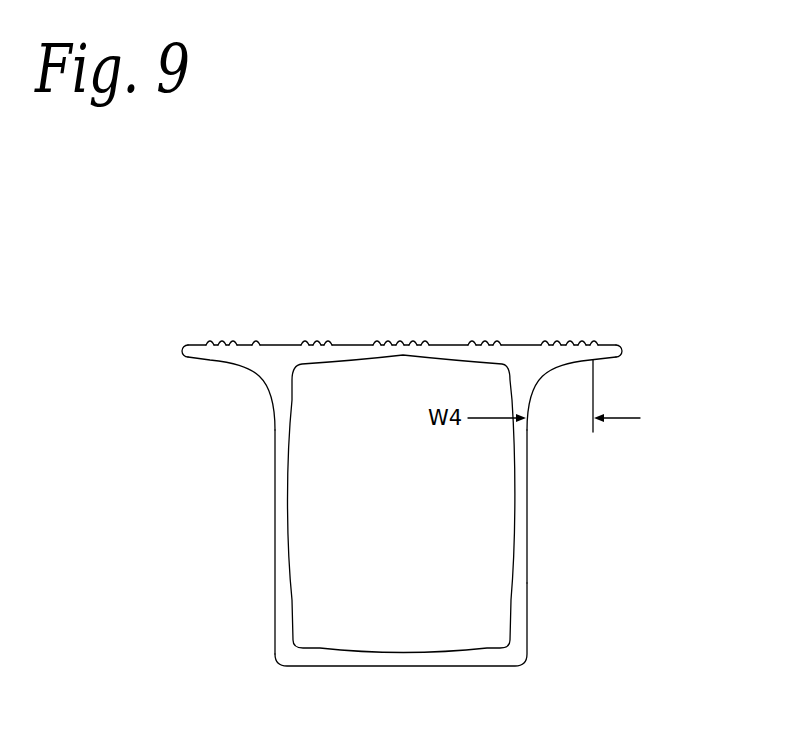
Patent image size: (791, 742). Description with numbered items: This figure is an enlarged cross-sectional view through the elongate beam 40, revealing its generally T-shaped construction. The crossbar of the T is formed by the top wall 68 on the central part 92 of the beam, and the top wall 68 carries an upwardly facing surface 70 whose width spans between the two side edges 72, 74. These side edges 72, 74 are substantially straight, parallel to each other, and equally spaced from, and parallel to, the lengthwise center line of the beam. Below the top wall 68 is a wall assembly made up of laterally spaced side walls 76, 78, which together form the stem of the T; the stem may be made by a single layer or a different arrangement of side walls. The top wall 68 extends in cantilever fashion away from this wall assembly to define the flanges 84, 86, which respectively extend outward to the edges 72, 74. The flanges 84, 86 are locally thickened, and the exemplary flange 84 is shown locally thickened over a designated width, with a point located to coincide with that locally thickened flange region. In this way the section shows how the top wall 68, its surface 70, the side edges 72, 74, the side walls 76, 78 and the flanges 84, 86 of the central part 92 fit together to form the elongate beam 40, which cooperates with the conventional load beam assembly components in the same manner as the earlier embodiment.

The elongate beam 40 is at (252, 513).
The top wall 68 is at (515, 345).
The upwardly facing surface 70 is at (373, 345).
The side edge 72 is at (622, 350).
The side edge 74 is at (183, 348).
The side wall 76 is at (527, 510).
The side wall 78 is at (275, 463).
The flange 84 is at (565, 345).
The flange 86 is at (238, 357).
The central part 92 is at (527, 583).